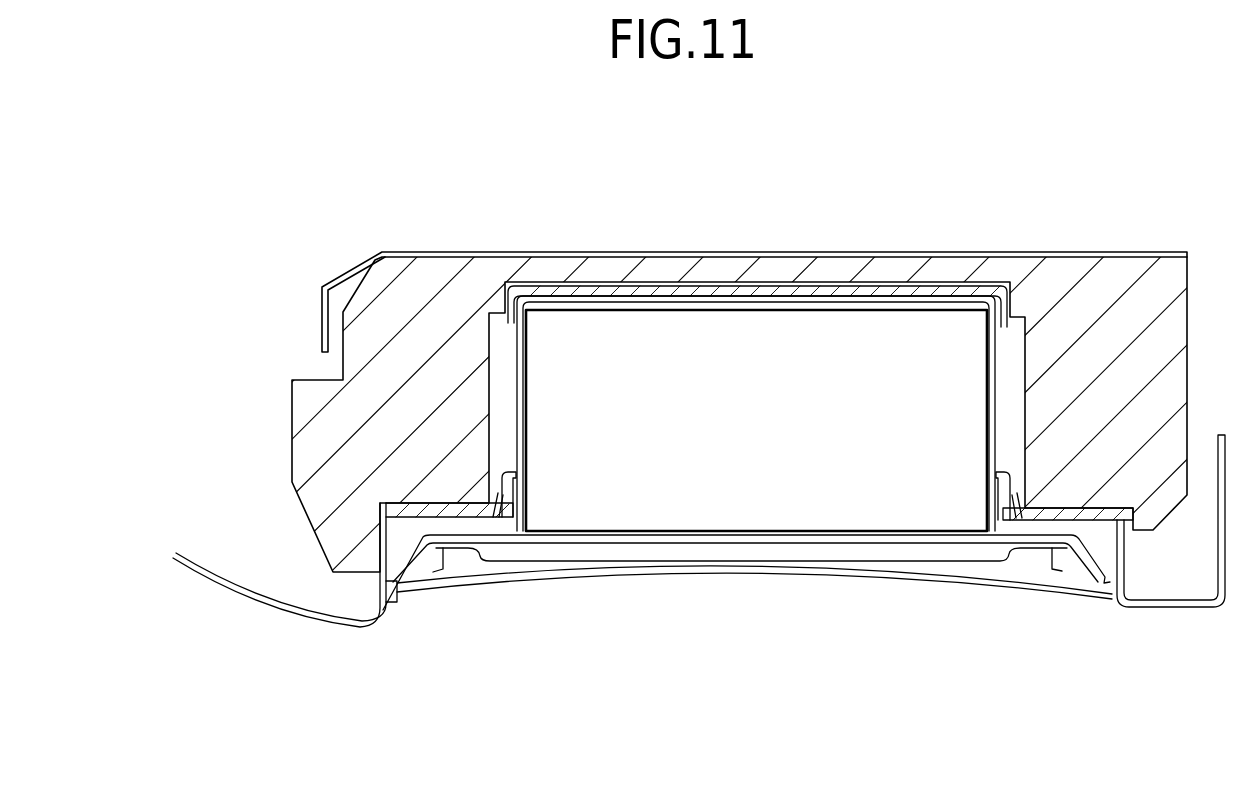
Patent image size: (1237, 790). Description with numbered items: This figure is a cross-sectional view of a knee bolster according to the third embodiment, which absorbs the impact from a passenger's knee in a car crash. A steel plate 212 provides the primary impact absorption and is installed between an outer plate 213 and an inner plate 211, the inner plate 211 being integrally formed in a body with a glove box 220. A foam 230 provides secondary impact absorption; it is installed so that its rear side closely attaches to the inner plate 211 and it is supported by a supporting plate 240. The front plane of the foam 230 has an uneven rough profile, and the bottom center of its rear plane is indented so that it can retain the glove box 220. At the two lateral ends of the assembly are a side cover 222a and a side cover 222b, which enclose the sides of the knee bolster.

The inner plate 211 is at (882, 535).
The steel plate 212 is at (1020, 577).
The outer plate 213 is at (552, 568).
The glove box 220 is at (748, 490).
The side cover 222a is at (1177, 607).
The side cover 222b is at (360, 627).
The foam 230 is at (297, 458).
The supporting plate 240 is at (612, 252).